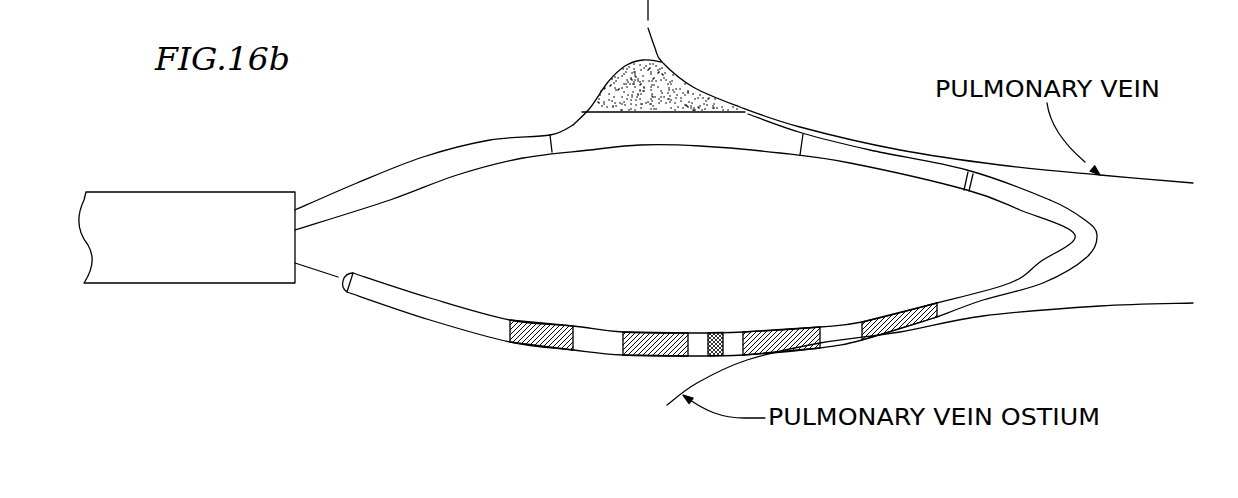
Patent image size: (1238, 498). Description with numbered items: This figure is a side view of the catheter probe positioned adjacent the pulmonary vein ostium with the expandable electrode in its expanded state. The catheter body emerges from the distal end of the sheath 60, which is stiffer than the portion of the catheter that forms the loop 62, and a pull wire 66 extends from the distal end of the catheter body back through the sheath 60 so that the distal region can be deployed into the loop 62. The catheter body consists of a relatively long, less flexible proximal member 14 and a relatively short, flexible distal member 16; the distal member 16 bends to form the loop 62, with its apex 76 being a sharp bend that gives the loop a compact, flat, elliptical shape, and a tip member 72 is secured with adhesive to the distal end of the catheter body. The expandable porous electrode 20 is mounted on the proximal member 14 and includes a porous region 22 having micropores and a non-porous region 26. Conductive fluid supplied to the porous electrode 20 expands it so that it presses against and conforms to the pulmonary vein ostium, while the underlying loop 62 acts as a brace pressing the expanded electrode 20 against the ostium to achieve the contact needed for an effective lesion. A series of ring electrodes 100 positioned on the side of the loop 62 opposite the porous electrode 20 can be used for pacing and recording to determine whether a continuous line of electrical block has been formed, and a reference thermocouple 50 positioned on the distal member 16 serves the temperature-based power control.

The sheath 60 is at (244, 192).
The pull wire 66 is at (322, 271).
The tip member 72 is at (341, 289).
The non-porous region 26 is at (605, 130).
The expandable porous electrode 20 is at (565, 111).
The porous region 22 is at (620, 63).
The proximal member 14 is at (945, 175).
The apex of the loop 76 is at (1108, 229).
The distal member 16 is at (1030, 277).
The loop 62 is at (595, 380).
The electrodes 100 is at (657, 333).
The reference thermocouple 50 is at (713, 335).